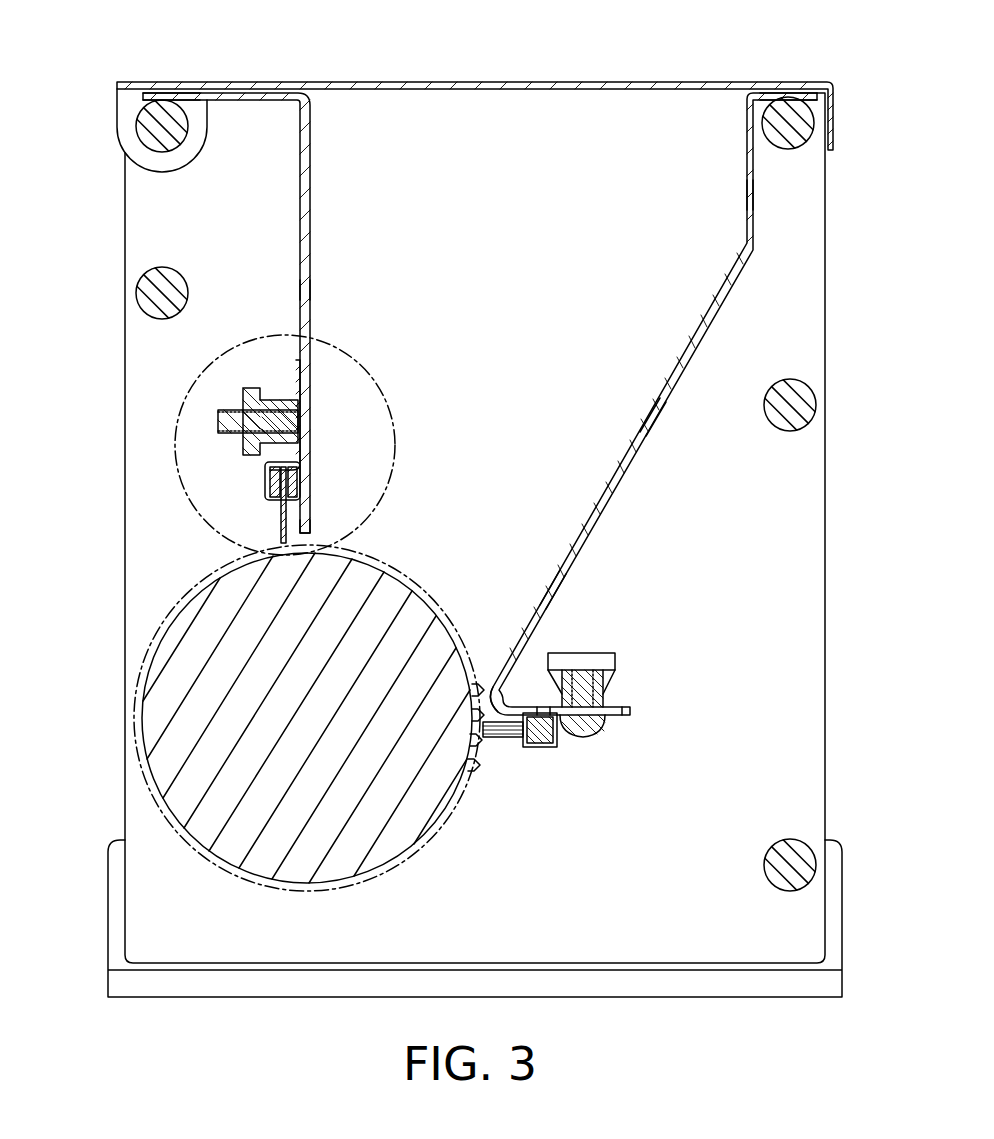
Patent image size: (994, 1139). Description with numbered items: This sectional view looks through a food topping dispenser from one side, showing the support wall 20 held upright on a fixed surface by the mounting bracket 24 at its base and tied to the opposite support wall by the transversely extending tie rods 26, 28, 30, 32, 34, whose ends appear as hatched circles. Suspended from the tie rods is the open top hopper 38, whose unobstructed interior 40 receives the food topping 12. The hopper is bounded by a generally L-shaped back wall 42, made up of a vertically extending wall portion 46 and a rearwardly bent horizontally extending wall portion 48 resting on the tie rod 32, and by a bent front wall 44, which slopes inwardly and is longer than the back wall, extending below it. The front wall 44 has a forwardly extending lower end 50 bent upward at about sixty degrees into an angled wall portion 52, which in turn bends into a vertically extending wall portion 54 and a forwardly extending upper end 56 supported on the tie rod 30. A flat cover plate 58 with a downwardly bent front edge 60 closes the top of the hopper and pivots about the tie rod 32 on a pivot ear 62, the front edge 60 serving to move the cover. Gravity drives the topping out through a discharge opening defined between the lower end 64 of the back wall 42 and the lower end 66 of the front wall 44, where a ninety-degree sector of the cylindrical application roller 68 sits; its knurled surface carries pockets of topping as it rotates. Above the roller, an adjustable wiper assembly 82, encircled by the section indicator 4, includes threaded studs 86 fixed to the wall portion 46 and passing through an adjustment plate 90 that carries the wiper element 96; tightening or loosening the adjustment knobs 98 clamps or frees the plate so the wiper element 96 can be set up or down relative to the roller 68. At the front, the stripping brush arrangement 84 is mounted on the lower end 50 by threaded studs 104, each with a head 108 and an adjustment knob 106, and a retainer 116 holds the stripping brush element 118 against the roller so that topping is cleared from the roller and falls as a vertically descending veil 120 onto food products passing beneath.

The section line 4- 4 is at (360, 353).
The food topping 12 is at (272, 714).
The support wall 20 is at (805, 484).
The mounting bracket 24 is at (118, 900).
The tie rod 26 is at (782, 862).
The tie rod 28 is at (795, 410).
The tie rod 30 is at (790, 140).
The tie rod 32 is at (153, 120).
The tie rod 34 is at (160, 290).
The hopper 38 is at (730, 347).
The interior 40 is at (650, 158).
The back wall 42 is at (325, 240).
The front wall 44 is at (600, 565).
The vertically extending wall portion 46 is at (305, 285).
The horizontally extending wall portion 48 is at (238, 97).
The lower end 50 is at (620, 711).
The angled wall portion 52 is at (633, 461).
The vertically extending wall portion 54 is at (755, 196).
The upper end 56 is at (790, 93).
The cover plate 58 is at (560, 82).
The front edge 60 is at (836, 112).
The pivot ear 62 is at (128, 108).
The lower end 64 is at (308, 535).
The lower end 66 is at (493, 690).
The application roller 68 is at (160, 710).
The fastener assembly 82 is at (215, 423).
The stripping brush arrangement 84 is at (629, 683).
The threaded stud 86 is at (218, 421).
The adjustment plate 90 is at (297, 365).
The wiper element 96 is at (282, 525).
The adjustment knob 98 is at (255, 392).
The threaded stud 104 is at (582, 691).
The adjustment knob 106 is at (568, 660).
The head 108 is at (588, 722).
The retainer 116 is at (540, 750).
The stripping brush element 118 is at (505, 738).
The veil of food topping 120 is at (478, 745).